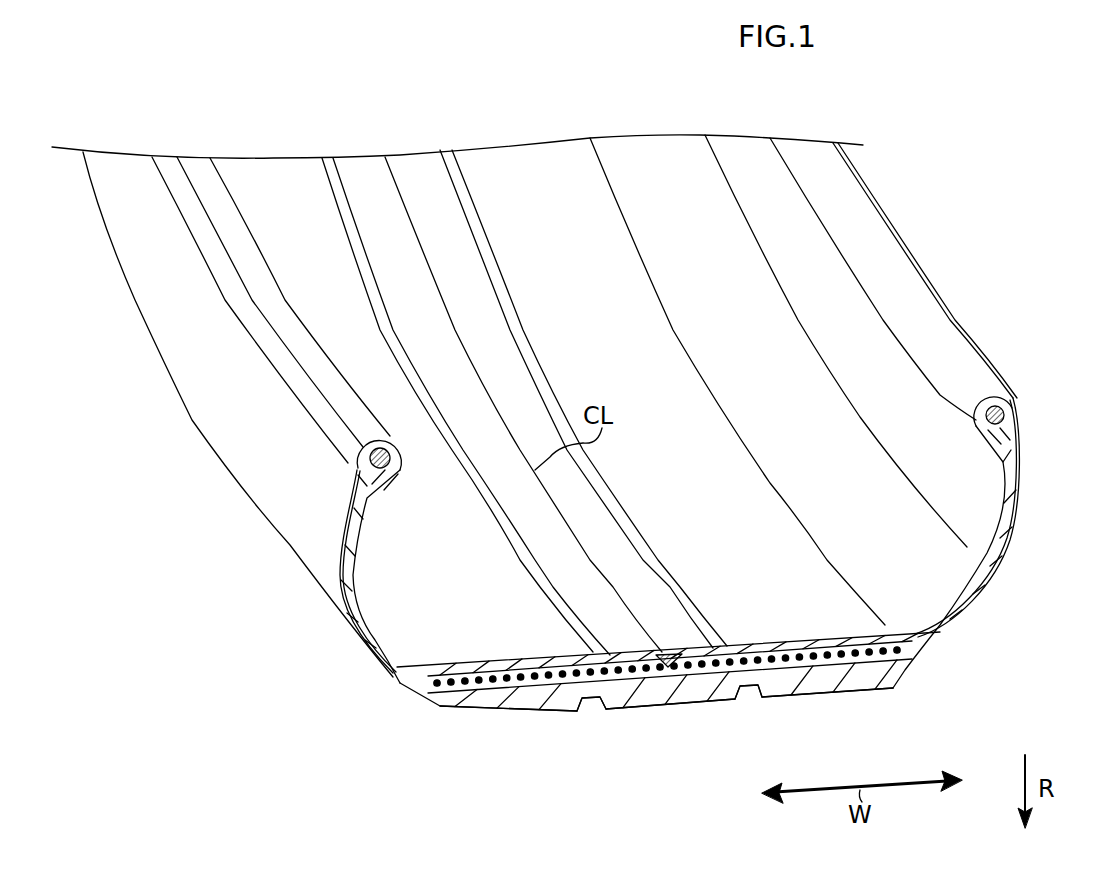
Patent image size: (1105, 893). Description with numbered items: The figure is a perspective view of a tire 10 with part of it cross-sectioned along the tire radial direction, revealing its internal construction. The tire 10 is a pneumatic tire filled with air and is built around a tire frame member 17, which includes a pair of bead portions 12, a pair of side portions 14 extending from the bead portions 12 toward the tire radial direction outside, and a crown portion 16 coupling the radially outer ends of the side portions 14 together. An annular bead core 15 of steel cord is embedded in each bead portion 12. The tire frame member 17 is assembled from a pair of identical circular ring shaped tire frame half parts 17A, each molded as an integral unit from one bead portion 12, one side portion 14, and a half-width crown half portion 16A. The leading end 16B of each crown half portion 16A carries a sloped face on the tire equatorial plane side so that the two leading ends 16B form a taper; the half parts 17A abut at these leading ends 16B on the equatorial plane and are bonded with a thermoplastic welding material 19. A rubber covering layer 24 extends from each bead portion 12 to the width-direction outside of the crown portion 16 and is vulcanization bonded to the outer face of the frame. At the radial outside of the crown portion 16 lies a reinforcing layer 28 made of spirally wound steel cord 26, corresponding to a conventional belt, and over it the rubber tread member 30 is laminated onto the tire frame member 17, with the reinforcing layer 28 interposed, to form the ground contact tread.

The tire 10 is at (1013, 112).
The bead portion 12 is at (365, 463).
The side portion 14 is at (347, 605).
The bead core 15 is at (382, 468).
The crown portion 16 is at (640, 677).
The crown half portion 16A is at (573, 665).
The leading end 16B is at (620, 660).
The tire frame member 17 is at (584, 351).
The tire frame half part 17A is at (588, 90).
The thermoplastic welding material 19 is at (668, 657).
The covering layer 24 is at (340, 562).
The cord 26 is at (442, 695).
The reinforcing layer 28 is at (413, 688).
The tread member 30 is at (833, 692).